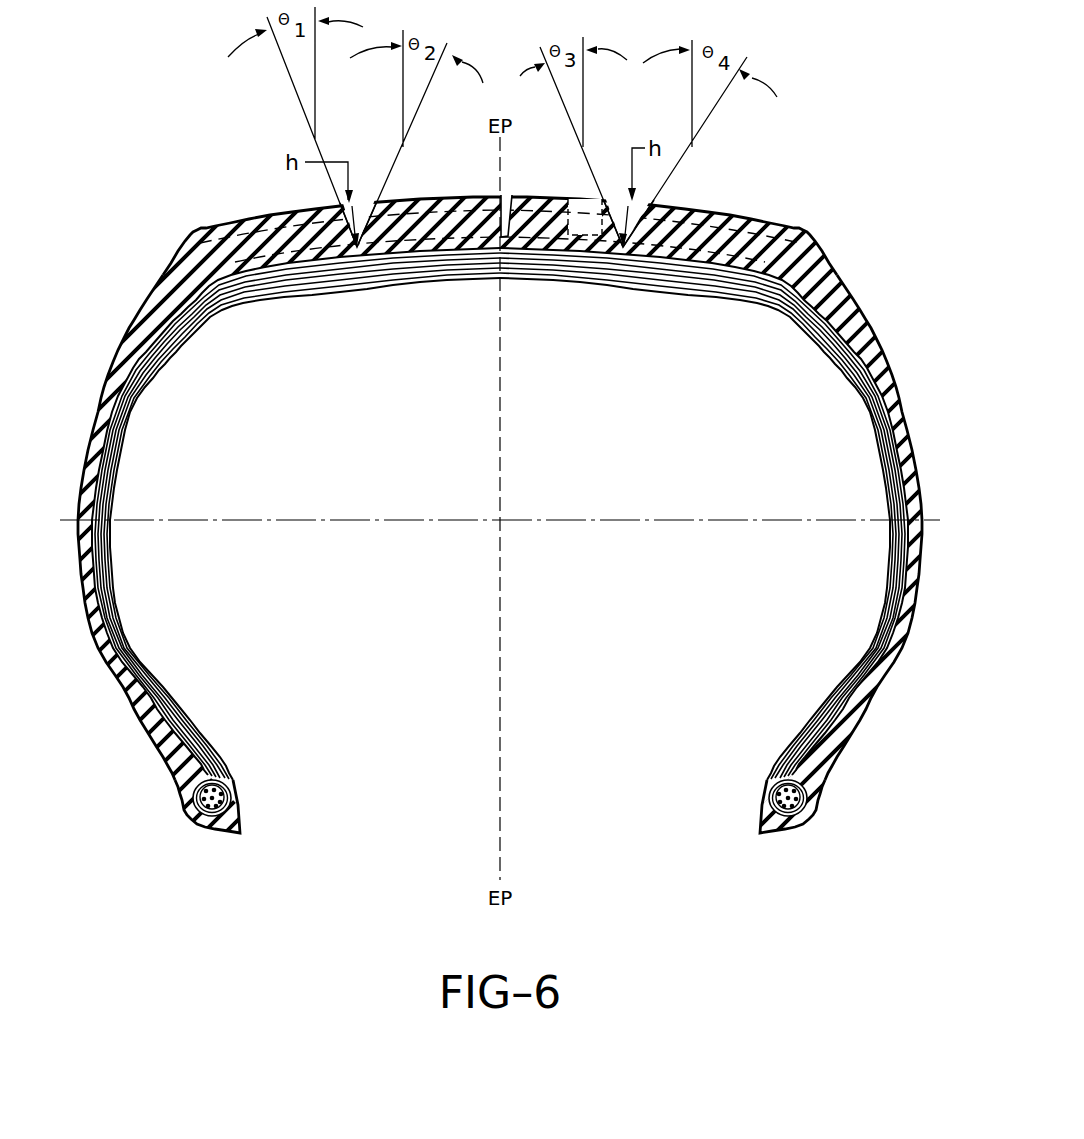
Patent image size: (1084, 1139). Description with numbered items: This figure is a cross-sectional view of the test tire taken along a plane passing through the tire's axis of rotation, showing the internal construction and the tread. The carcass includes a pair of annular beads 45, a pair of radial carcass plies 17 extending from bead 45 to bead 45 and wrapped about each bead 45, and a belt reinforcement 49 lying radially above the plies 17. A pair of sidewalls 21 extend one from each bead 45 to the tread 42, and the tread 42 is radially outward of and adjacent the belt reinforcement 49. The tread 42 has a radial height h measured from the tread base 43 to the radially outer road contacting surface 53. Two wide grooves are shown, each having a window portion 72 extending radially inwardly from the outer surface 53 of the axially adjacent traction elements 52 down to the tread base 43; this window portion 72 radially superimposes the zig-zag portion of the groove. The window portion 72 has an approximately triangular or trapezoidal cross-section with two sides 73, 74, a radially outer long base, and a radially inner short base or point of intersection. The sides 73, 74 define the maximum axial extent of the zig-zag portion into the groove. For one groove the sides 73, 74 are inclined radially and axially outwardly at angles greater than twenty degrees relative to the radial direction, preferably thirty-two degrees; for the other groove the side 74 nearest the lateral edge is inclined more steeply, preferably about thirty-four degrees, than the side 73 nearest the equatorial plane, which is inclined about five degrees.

The radial carcass ply 17 is at (101, 590).
The sidewall 21 is at (90, 440).
The tread 42 is at (716, 198).
The tread base 43 is at (362, 240).
The annular bead 45 is at (226, 805).
The belt reinforcement 49 is at (533, 260).
The traction element 52 is at (430, 200).
The radially outer road contacting surface 53 is at (277, 213).
The window portion 72 is at (355, 215).
The side of the trapezoid 73 is at (392, 222).
The side of the trapezoid 74 is at (346, 222).